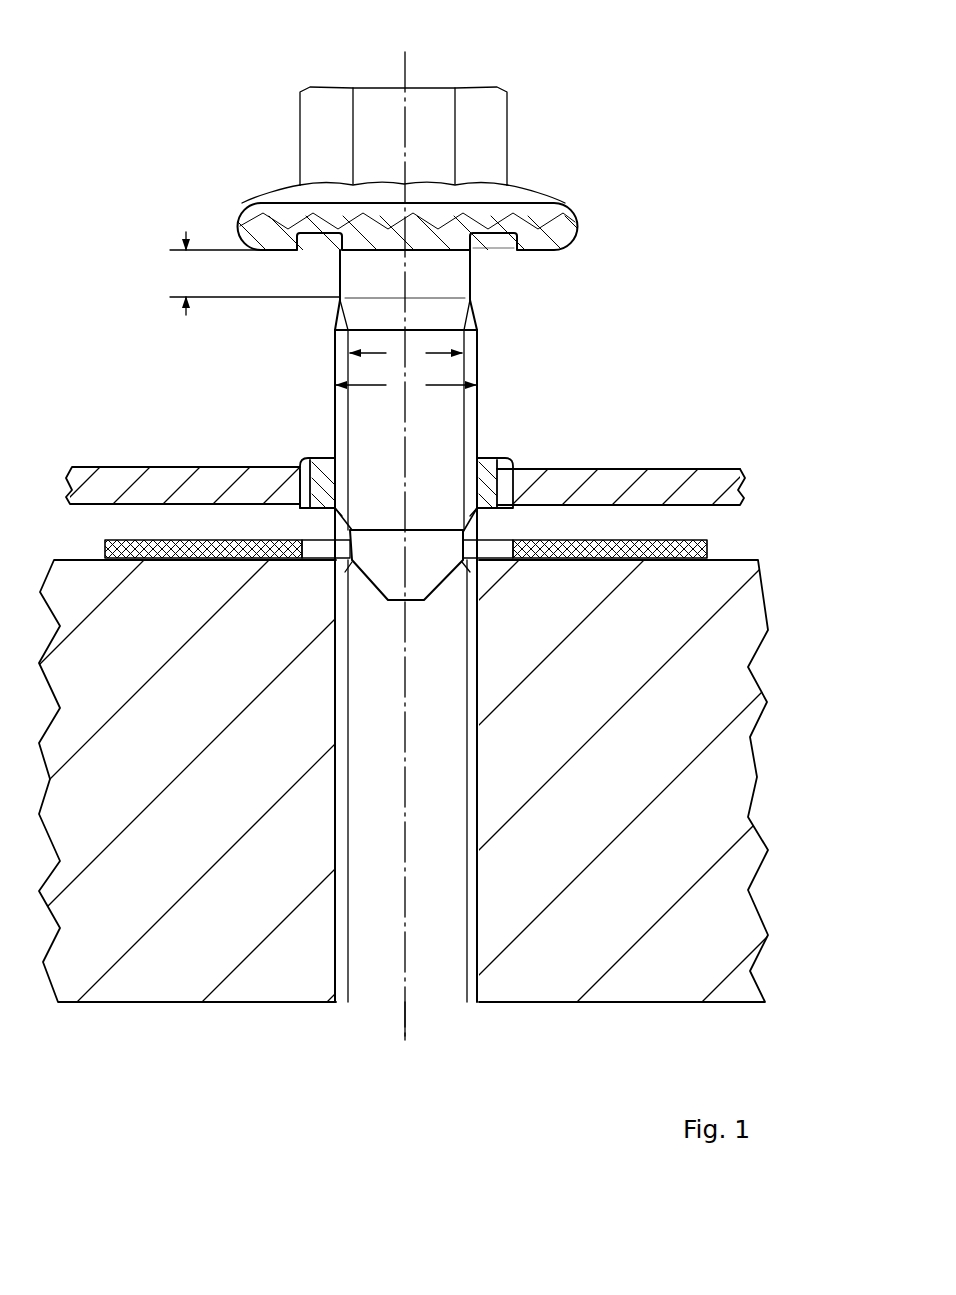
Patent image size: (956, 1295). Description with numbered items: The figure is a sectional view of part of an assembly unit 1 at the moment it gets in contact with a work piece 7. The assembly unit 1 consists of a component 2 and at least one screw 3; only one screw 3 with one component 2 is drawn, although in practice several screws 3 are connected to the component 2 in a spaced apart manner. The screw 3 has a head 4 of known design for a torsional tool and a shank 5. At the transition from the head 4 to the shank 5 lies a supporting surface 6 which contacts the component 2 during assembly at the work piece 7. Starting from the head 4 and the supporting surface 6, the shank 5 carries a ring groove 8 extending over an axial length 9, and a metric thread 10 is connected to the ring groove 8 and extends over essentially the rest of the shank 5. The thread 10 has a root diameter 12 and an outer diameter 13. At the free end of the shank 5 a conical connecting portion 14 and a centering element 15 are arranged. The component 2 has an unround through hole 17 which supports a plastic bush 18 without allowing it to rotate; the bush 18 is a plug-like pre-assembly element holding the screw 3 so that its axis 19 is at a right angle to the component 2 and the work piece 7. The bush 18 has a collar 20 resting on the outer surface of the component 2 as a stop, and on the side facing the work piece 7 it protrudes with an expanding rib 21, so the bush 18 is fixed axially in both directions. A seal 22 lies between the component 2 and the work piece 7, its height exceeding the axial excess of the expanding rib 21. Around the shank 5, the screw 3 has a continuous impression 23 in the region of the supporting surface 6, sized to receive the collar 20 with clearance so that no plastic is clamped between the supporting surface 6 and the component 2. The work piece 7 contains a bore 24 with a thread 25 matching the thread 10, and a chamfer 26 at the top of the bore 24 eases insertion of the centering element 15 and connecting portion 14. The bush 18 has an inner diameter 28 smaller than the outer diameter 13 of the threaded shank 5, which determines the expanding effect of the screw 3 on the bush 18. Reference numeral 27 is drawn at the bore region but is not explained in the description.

The assembly unit 1 is at (770, 338).
The component 2 is at (727, 453).
The screw 3 is at (586, 223).
The head 4 is at (475, 117).
The shank 5 is at (448, 412).
The supporting surface 6 is at (684, 266).
The work piece 7 is at (717, 653).
The ring groove 8 is at (473, 275).
The axial length 9 is at (255, 273).
The thread 10 is at (470, 425).
The root diameter 12 is at (406, 354).
The outer diameter 13 is at (406, 386).
The connecting portion 14 is at (463, 520).
The centering element 15 is at (478, 558).
The through hole 17 is at (716, 470).
The bush 18 is at (488, 455).
The axis 19 is at (432, 523).
The collar 20 is at (234, 430).
The expanding rib 21 is at (320, 460).
The seal 22 is at (593, 563).
The impression 23 is at (503, 243).
The bore 24 is at (469, 809).
The thread 25 is at (480, 831).
The chamfer 26 is at (228, 469).
The bore 27 is at (410, 865).
The inner diameter 28 is at (253, 385).